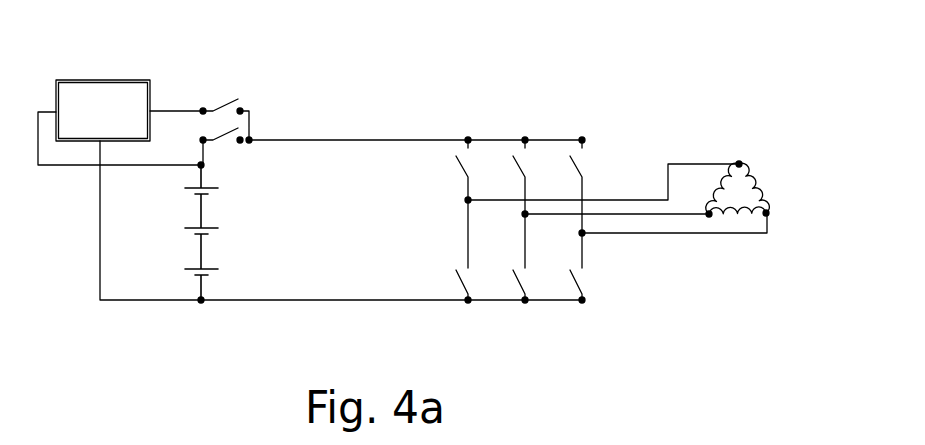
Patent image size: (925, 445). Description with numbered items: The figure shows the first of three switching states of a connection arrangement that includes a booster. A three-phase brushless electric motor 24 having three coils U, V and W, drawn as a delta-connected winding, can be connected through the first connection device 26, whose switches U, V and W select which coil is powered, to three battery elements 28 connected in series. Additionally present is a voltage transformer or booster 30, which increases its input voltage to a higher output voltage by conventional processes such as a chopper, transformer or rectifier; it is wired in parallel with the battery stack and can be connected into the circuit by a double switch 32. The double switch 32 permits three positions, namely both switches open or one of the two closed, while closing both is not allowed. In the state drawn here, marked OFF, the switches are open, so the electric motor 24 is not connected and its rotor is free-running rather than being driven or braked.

The electric motor 24 is at (710, 138).
The first connection device 26 is at (542, 98).
The battery elements 28 is at (268, 246).
The voltage transformer 30 is at (100, 92).
The double switch 32 is at (233, 93).